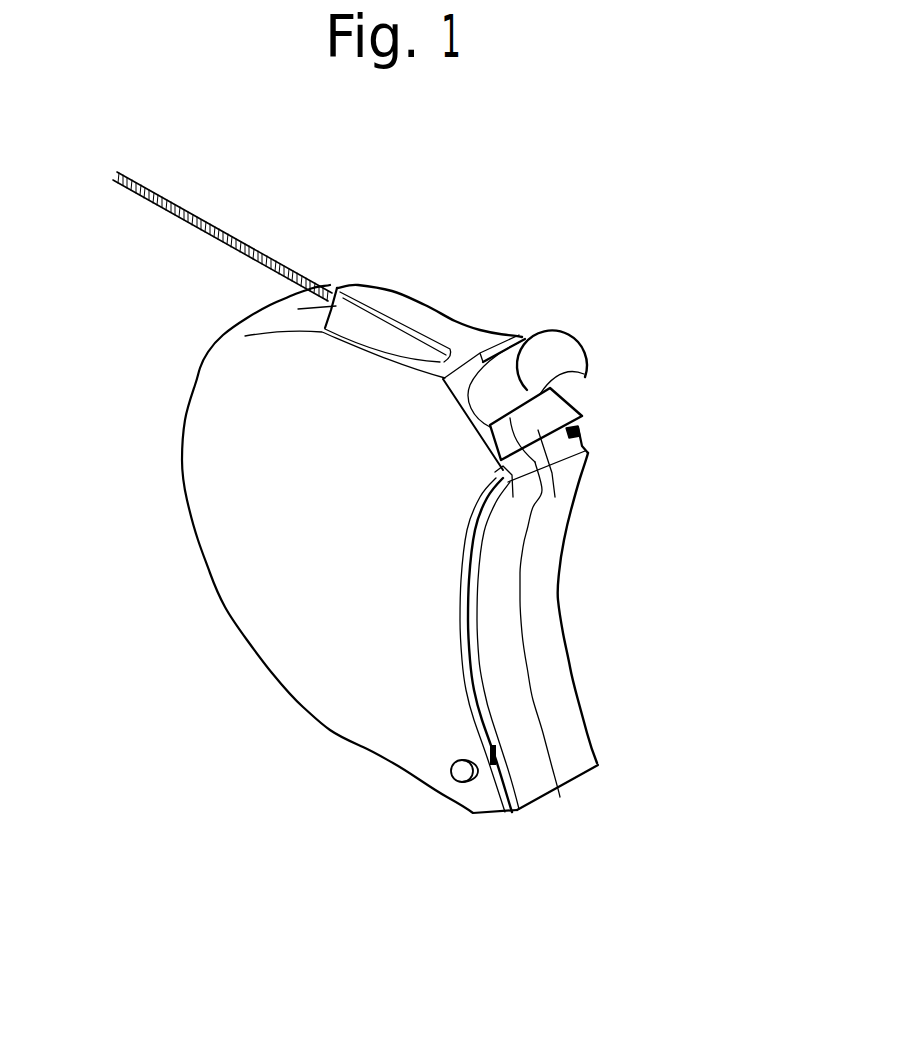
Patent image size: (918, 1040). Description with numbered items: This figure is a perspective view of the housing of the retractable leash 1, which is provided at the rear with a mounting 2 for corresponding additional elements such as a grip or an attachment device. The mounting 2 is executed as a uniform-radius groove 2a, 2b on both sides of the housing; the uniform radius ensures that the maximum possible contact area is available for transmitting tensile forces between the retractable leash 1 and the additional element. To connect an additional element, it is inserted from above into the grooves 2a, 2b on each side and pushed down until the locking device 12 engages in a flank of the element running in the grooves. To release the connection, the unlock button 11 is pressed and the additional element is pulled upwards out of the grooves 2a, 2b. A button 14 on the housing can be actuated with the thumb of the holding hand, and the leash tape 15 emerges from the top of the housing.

The retractable leash 1 is at (248, 383).
The mounting 2 is at (626, 634).
The groove 2a is at (582, 782).
The groove 2b is at (508, 808).
The unlock button 11 is at (459, 772).
The locking device 12 is at (493, 758).
The button 14 is at (553, 353).
The tape blade 15 is at (178, 210).